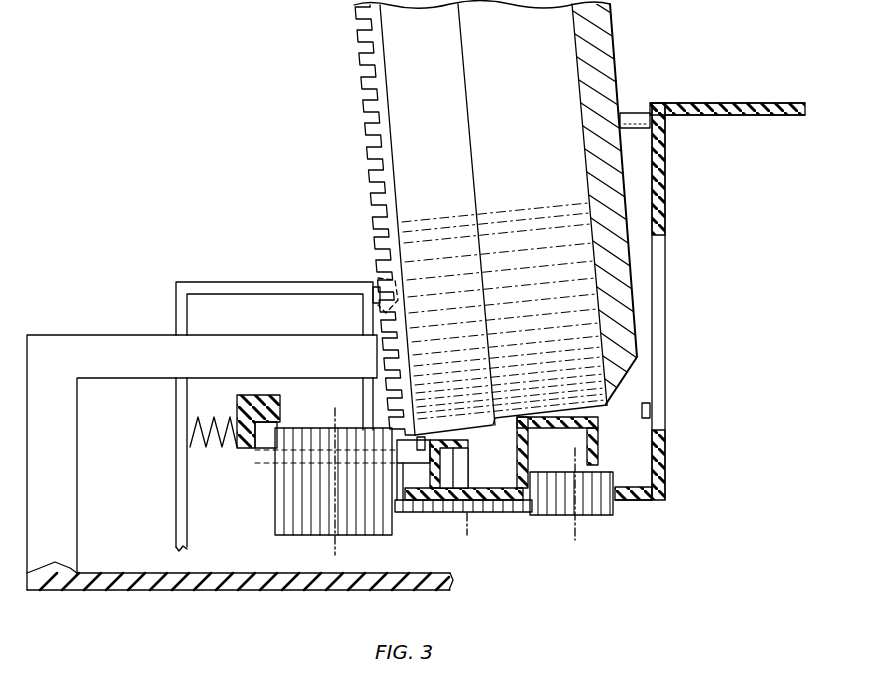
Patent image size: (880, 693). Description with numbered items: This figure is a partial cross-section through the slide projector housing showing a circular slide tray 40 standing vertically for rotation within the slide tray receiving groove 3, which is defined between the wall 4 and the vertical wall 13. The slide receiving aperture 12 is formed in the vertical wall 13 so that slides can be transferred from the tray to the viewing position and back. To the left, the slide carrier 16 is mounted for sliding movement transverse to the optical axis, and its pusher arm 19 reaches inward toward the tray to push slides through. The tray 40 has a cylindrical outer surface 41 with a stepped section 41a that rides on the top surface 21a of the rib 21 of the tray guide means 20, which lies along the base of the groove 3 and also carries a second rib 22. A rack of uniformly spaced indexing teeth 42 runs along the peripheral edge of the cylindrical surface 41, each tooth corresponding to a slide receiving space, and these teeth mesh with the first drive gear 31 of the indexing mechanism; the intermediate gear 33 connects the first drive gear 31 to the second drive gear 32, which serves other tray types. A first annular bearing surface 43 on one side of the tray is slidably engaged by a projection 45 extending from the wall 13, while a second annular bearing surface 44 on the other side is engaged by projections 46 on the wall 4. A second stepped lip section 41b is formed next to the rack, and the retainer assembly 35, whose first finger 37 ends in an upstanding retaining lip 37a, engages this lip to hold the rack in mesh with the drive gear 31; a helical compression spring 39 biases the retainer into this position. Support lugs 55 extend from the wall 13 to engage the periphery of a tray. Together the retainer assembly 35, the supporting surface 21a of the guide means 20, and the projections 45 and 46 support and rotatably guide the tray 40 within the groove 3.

The slide tray receiving groove 3 is at (643, 322).
The wall 4 is at (250, 280).
The slide receiving aperture 12 is at (657, 280).
The vertical wall 13 is at (643, 203).
The slide carrier 16 is at (80, 515).
The pusher arm 19 is at (110, 347).
The tray guide means 20 is at (608, 432).
The rib 21 is at (595, 447).
The top surface of rib 21a is at (580, 380).
The rib 22 is at (447, 452).
The first drive gear 31 is at (353, 537).
The second drive gear 32 is at (590, 513).
The intermediate gear 33 is at (487, 513).
The retainer assembly 35 is at (267, 480).
The first finger 37 is at (413, 465).
The retaining lip 37a is at (423, 437).
The helical compression spring 39 is at (217, 440).
The circular slide tray 40 is at (617, 50).
The cylindrical outer surface 41 is at (528, 212).
The stepped section 41a is at (570, 103).
The second stepped lip section 41b is at (363, 142).
The indexing teeth 42 is at (367, 220).
The first annular bearing surface 43 is at (645, 124).
The second annular bearing surface 44 is at (383, 309).
The projection 45 is at (643, 110).
The projections 46 is at (372, 272).
The support lugs 55 is at (645, 403).